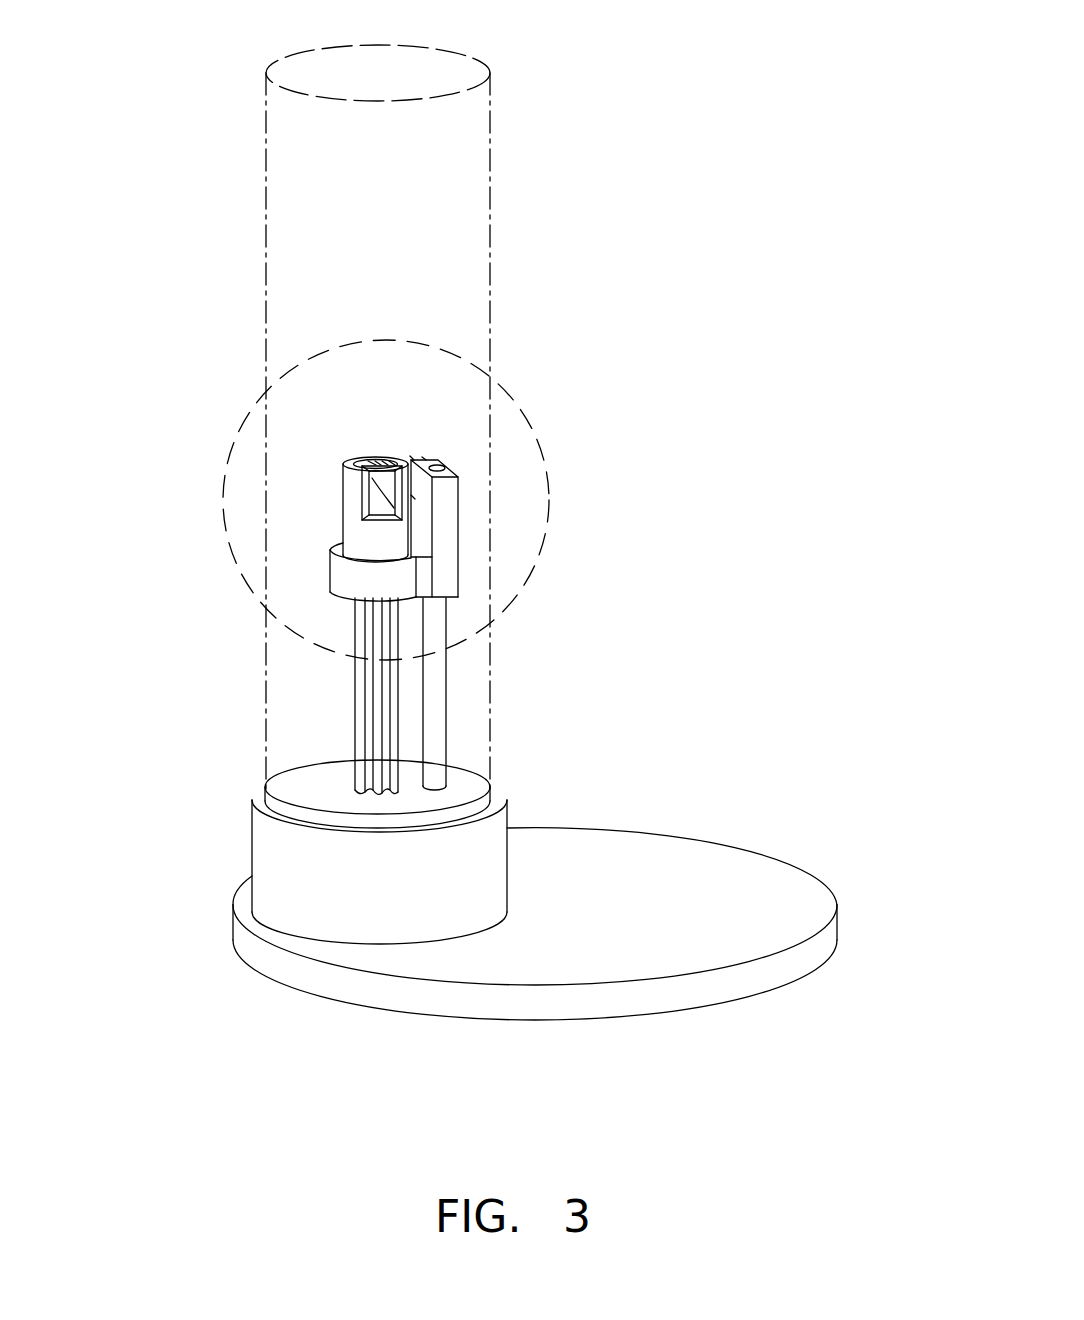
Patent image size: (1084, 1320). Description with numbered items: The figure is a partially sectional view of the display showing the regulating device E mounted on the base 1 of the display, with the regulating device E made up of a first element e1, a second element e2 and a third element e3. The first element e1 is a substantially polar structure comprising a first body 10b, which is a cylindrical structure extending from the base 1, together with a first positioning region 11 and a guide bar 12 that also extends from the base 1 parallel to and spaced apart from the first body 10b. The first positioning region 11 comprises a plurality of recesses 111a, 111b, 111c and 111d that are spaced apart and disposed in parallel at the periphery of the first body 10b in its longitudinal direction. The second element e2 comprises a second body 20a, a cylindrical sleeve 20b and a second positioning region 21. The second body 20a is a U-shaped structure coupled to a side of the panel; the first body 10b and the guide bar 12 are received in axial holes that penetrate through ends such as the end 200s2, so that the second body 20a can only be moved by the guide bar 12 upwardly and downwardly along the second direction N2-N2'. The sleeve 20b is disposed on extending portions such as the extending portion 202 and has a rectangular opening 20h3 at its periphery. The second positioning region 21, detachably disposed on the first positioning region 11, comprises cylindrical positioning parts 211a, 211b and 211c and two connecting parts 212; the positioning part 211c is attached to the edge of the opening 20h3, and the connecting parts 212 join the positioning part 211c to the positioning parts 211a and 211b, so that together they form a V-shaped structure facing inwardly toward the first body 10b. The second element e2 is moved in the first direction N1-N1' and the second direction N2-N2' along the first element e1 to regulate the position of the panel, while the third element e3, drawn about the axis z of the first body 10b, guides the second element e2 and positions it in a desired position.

The base 1 is at (803, 988).
The first body 10b is at (377, 684).
The first positioning region 11 is at (610, 233).
The recess 111a is at (372, 462).
The recess 111b is at (378, 462).
The recess 111c is at (386, 462).
The recess 111d is at (393, 462).
The guide bar 12 is at (413, 460).
The second body 20a is at (458, 580).
The cylindrical sleeve 20b is at (408, 552).
The rectangular opening 20h3 is at (335, 486).
The end 200s2 is at (410, 600).
The extending portion 202 is at (385, 594).
The second positioning region 21 is at (669, 305).
The cylindrical positioning part 211a is at (413, 497).
The cylindrical positioning part 211b is at (413, 458).
The cylindrical positioning part 211c is at (412, 458).
The connecting part 212 is at (413, 496).
The regulating device E is at (133, 175).
The first element e1 is at (355, 460).
The second element e2 is at (358, 497).
The third element e3 is at (262, 193).
The rotation axis region z is at (228, 545).
The first direction N1 is at (330, 549).
The first direction N1' is at (327, 615).
The second direction N2 is at (583, 553).
The second direction N2' is at (597, 638).